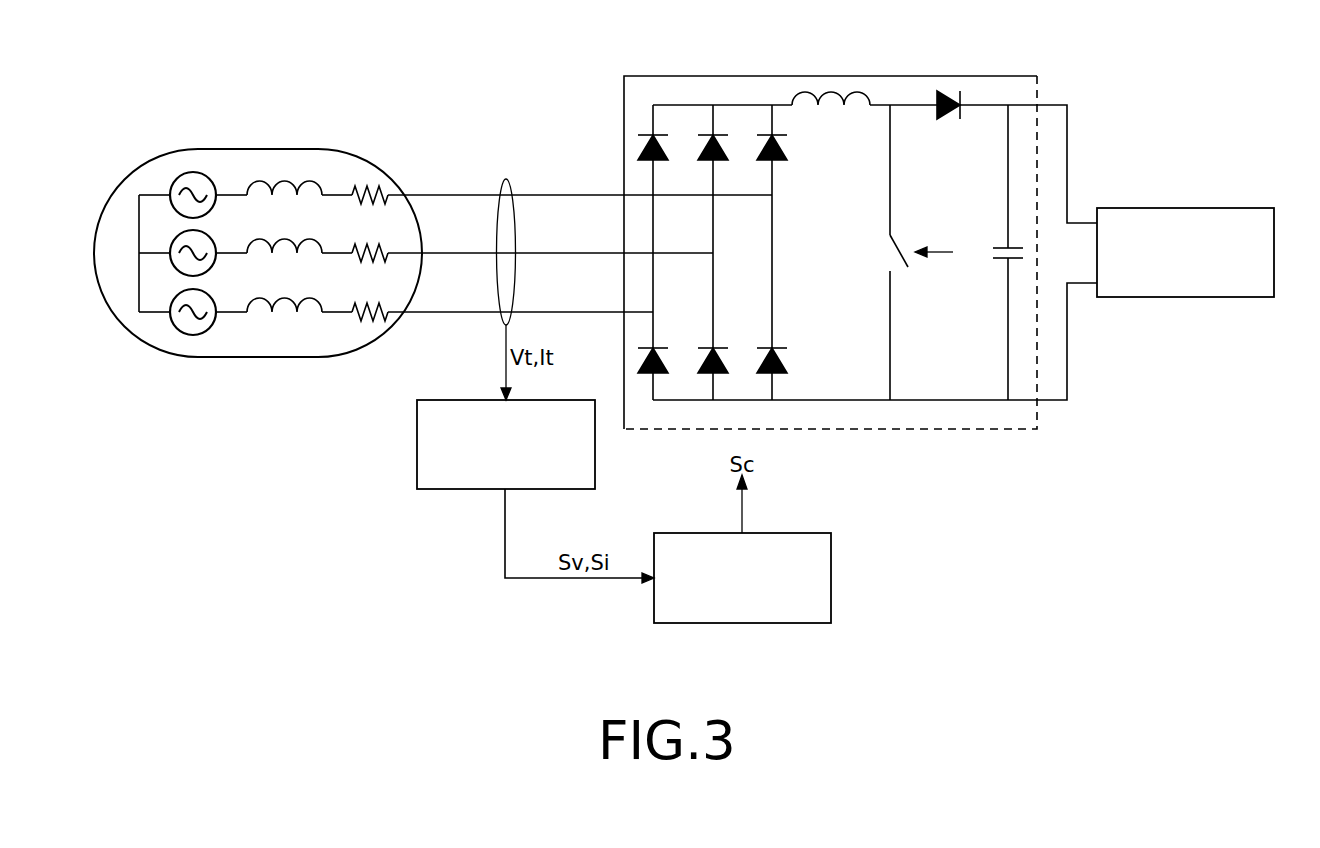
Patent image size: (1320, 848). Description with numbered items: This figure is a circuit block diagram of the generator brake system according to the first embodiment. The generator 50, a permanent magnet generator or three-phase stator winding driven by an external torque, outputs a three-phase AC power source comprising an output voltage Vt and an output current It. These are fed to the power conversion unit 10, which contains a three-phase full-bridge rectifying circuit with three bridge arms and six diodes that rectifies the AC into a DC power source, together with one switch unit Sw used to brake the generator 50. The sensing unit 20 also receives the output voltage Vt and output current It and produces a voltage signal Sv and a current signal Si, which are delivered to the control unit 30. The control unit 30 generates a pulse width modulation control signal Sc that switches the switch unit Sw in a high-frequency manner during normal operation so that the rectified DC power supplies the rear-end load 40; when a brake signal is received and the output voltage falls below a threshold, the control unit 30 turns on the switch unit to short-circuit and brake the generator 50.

The power conversion unit 10 is at (830, 82).
The sensing unit 20 is at (477, 483).
The control unit 30 is at (742, 615).
The load 40 is at (1185, 215).
The generator 50 is at (257, 155).